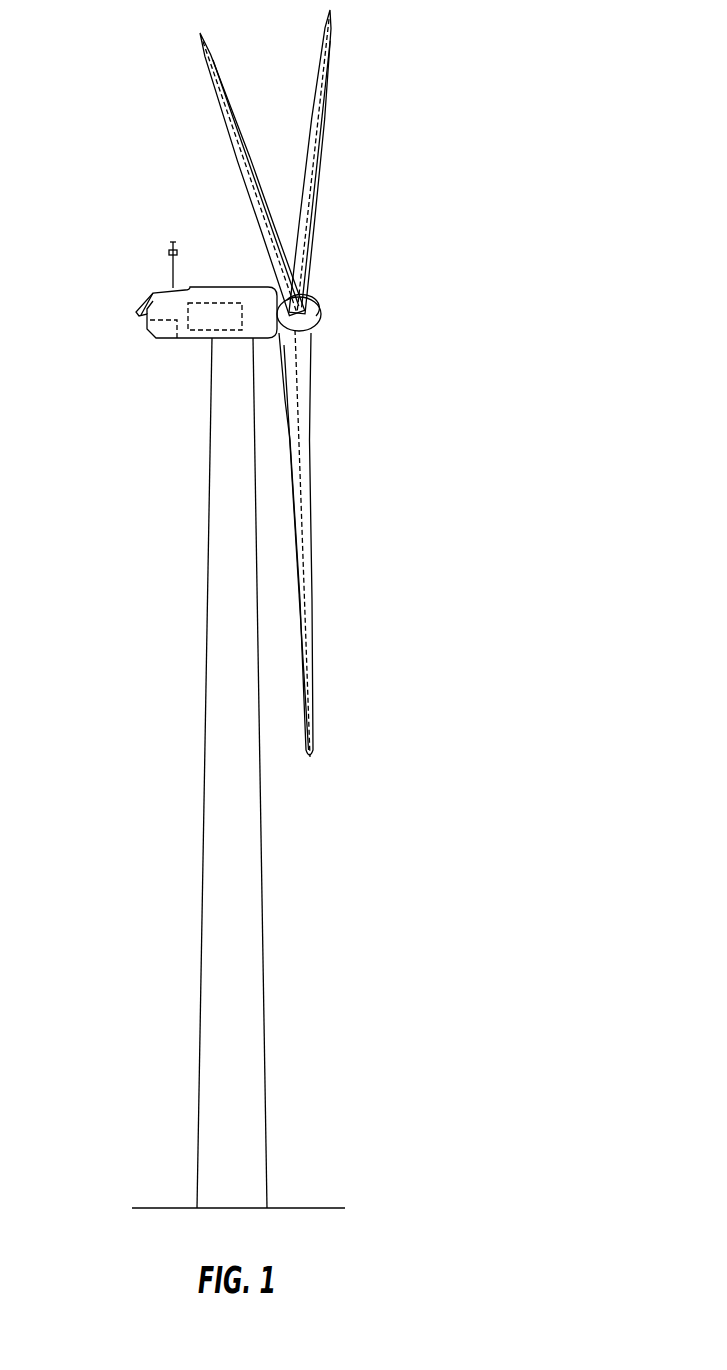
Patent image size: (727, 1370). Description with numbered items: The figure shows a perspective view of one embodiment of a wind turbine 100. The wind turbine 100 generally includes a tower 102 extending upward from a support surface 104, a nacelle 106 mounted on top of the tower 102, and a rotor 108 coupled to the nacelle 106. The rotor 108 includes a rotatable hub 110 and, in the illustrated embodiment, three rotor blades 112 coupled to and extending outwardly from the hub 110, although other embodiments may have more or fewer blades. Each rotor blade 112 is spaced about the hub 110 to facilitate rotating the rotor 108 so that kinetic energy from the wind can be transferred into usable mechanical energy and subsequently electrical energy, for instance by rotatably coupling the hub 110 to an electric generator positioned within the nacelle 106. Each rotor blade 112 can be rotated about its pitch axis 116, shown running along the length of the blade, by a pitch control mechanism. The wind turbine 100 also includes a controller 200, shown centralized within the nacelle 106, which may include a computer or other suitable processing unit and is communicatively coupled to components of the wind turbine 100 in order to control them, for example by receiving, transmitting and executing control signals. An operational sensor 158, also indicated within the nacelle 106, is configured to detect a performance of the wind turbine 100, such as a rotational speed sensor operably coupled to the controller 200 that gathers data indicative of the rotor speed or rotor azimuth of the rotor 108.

The wind turbine 100 is at (467, 116).
The tower 102 is at (243, 845).
The support surface 104 is at (305, 1208).
The nacelle 106 is at (180, 340).
The rotor 108 is at (363, 270).
The rotatable hub 110 is at (323, 308).
The rotor blade 112 is at (312, 130).
The pitch axis 116 is at (248, 182).
The operational sensor 158 is at (160, 328).
The controller 200 is at (205, 303).